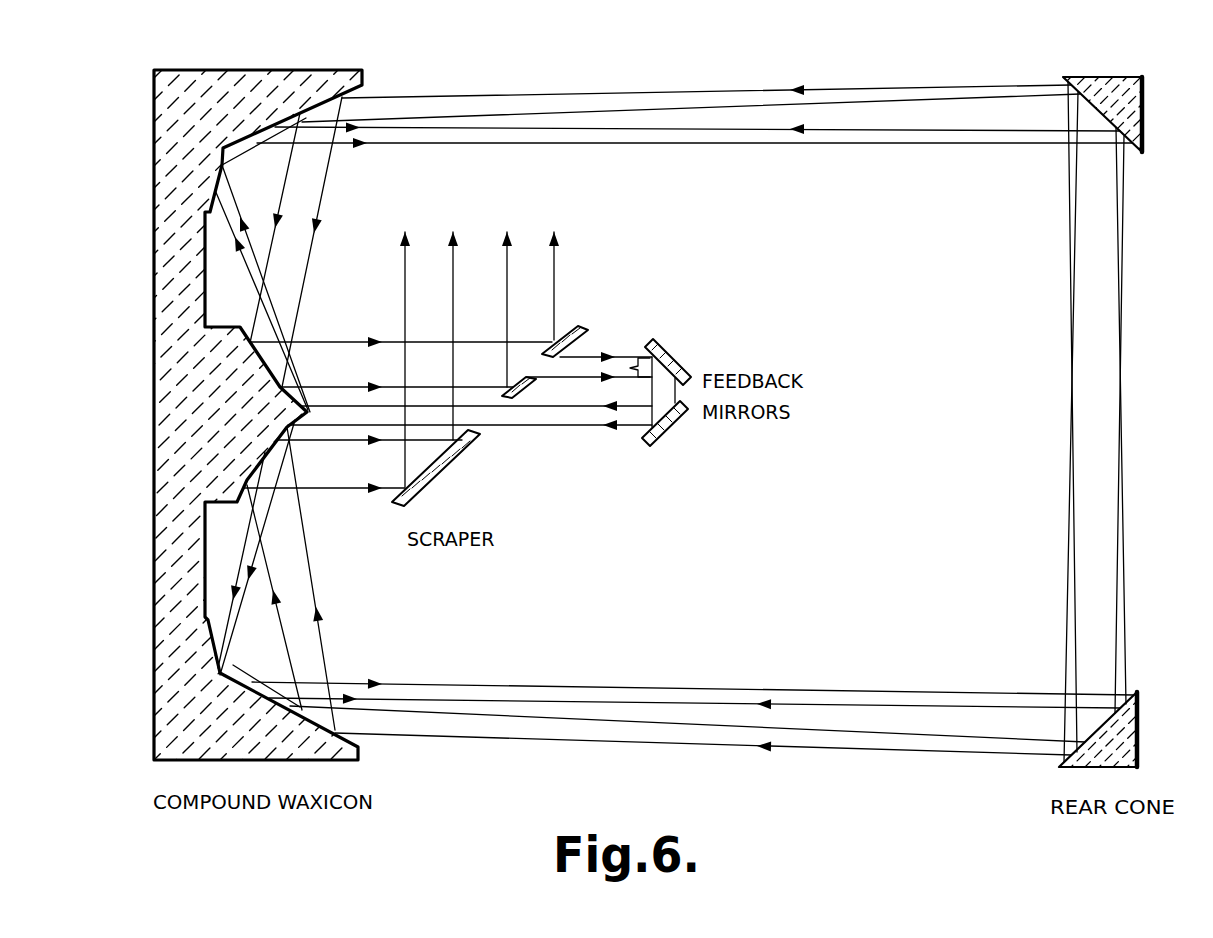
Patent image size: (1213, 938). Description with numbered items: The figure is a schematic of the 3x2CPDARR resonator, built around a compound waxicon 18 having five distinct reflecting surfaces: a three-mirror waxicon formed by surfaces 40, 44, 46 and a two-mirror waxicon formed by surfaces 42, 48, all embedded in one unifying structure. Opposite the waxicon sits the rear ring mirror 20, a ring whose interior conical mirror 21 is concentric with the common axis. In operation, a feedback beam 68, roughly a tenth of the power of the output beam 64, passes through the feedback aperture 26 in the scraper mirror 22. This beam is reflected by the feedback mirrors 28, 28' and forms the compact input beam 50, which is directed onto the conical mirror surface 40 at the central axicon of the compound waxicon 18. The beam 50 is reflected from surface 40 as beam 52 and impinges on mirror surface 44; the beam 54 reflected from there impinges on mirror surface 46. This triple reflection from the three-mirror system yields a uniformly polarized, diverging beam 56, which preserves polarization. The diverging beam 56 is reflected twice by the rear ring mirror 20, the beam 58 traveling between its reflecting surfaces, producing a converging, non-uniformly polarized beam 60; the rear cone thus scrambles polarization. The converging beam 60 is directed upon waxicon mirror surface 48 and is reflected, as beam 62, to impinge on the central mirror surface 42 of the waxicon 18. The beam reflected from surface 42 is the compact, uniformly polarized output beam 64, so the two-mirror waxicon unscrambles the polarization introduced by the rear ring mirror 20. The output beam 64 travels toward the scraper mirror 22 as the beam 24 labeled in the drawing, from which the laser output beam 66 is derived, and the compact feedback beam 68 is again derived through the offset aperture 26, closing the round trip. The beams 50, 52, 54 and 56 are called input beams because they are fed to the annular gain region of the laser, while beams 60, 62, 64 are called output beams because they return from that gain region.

The compound waxicon 18 is at (237, 70).
The rear ring mirror 20 is at (1120, 39).
The interior conical mirror 21 is at (1100, 120).
The scraper mirror 22 is at (437, 480).
The output beam 24 is at (480, 417).
The feedback aperture 26 is at (542, 367).
The feedback mirror 28 is at (691, 373).
The feedback mirror 28' is at (690, 438).
The conical mirror surface 40 is at (295, 404).
The central mirror surface 42 is at (258, 352).
The mirror surface 44 is at (216, 616).
The mirror surface 46 is at (222, 680).
The waxicon mirror surface 48 is at (332, 100).
The feedback beam 50 is at (581, 407).
The beam 52 is at (272, 508).
The beam 54 is at (236, 663).
The diverging beam 56 is at (943, 722).
The beam 58 is at (1075, 615).
The converging beam 60 is at (672, 127).
The output beam 62 is at (290, 182).
The output beam 64 is at (336, 387).
The laser output beam 66 is at (453, 281).
The feedback beam 68 is at (630, 368).